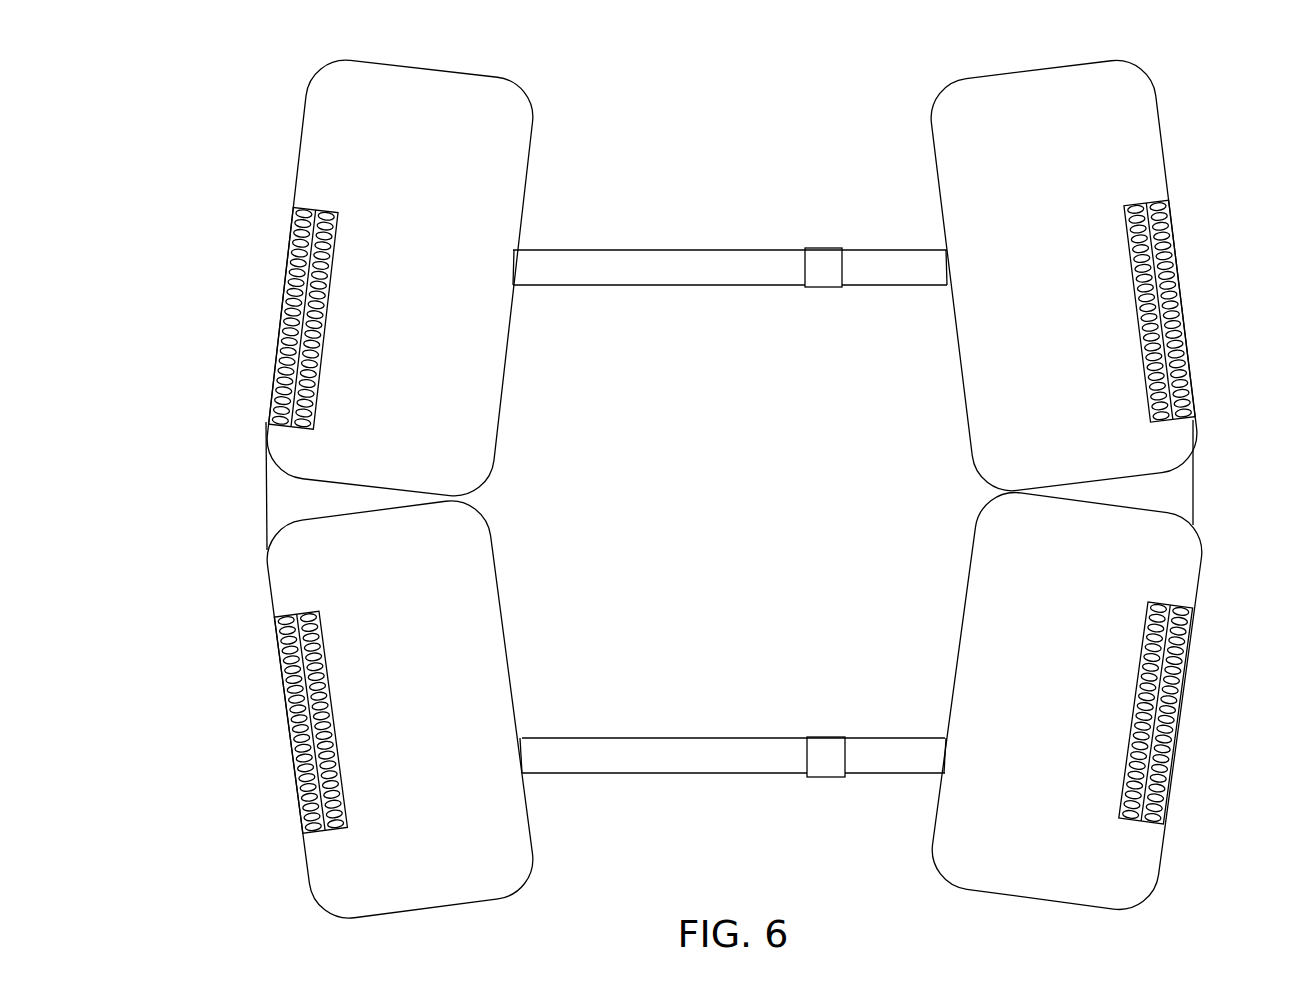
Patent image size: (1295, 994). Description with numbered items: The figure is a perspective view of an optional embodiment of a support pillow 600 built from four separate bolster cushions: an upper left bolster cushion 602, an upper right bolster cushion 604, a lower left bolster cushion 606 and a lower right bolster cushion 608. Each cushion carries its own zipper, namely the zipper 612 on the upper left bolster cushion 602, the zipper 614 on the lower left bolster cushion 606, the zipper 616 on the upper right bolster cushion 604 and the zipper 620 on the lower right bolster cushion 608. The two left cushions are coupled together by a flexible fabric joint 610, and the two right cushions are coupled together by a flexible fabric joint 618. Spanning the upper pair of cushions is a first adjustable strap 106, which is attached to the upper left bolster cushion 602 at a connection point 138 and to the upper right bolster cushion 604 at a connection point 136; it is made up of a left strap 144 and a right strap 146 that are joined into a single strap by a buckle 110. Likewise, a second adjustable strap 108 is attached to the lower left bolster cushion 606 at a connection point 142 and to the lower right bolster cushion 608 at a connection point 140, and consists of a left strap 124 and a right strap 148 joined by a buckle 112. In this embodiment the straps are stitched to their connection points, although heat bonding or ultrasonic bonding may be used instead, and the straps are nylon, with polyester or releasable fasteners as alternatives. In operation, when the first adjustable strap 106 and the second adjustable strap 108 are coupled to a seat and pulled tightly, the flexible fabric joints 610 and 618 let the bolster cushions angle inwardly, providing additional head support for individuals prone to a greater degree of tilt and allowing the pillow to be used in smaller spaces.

The support pillow 600 is at (270, 58).
The upper left bolster cushion 602 is at (400, 111).
The upper right bolster cushion 604 is at (1018, 106).
The lower left bolster cushion 606 is at (356, 549).
The lower right bolster cushion 608 is at (1060, 543).
The first adjustable strap 106 is at (730, 269).
The second adjustable strap 108 is at (733, 759).
The buckle 110 is at (822, 248).
The buckle 112 is at (822, 738).
The connection point 136 is at (944, 246).
The connection point 138 is at (517, 249).
The connection point 140 is at (945, 733).
The connection point 142 is at (520, 733).
The left strap 144 is at (715, 285).
The right strap 146 is at (878, 285).
The left strap 124 is at (708, 773).
The right strap 148 is at (883, 773).
The flexible fabric joint 610 is at (283, 505).
The flexible fabric joint 618 is at (1172, 495).
The zipper 612 is at (283, 283).
The zipper 614 is at (283, 708).
The zipper 616 is at (1180, 282).
The zipper 620 is at (1185, 680).